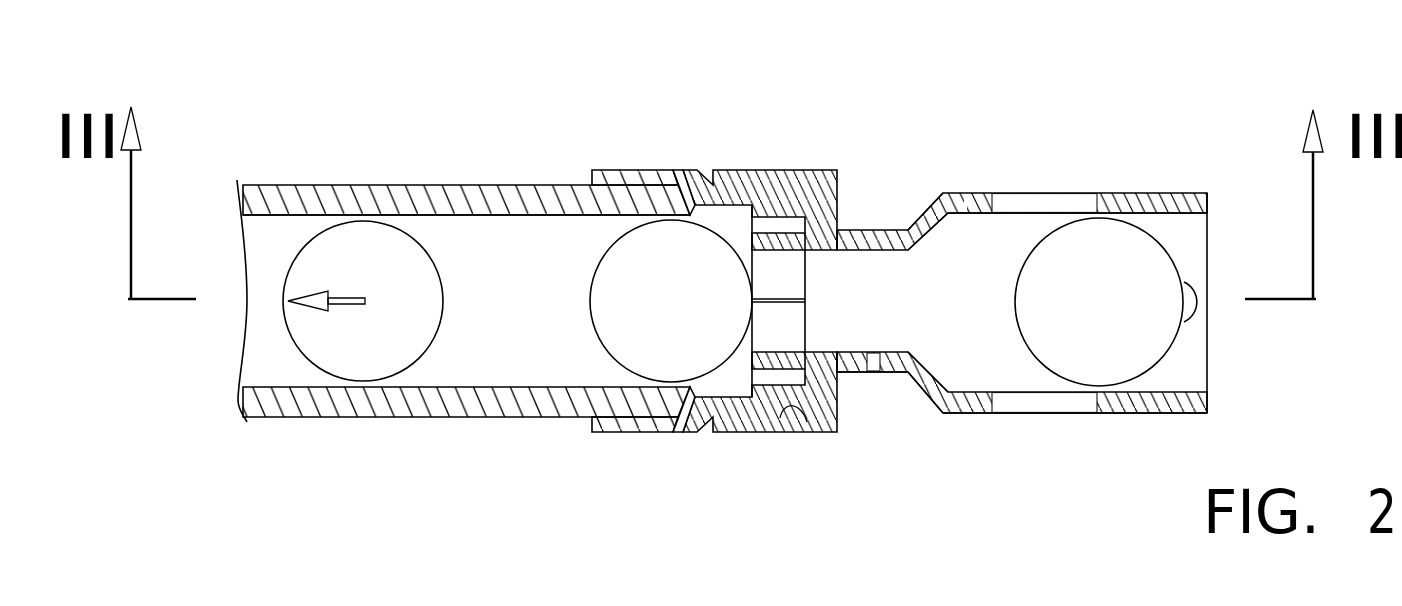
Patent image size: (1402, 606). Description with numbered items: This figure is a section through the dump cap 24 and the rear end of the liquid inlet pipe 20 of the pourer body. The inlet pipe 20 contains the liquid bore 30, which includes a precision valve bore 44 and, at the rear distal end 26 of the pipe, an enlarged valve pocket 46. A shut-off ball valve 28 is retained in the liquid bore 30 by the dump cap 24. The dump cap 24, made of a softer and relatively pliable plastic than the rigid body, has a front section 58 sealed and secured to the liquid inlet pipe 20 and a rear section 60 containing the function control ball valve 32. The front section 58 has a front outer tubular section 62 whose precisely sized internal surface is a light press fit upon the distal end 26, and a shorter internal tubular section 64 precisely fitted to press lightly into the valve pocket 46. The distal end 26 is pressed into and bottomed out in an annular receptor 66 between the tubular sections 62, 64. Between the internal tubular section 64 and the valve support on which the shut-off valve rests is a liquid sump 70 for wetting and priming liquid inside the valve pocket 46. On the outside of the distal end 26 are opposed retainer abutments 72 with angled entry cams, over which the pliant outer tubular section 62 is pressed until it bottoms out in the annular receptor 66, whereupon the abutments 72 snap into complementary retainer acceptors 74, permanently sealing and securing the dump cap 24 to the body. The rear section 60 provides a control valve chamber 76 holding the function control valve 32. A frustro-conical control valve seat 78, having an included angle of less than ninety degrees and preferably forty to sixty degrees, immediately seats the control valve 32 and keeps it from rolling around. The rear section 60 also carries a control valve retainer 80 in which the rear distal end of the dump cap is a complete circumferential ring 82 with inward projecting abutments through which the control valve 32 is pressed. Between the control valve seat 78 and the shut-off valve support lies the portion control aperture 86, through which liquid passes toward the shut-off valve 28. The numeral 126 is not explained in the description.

The liquid inlet pipe 20 is at (303, 417).
The dump cap 24 is at (862, 230).
The rear distal end 26 is at (837, 407).
The shut-off ball valve 28 is at (315, 233).
The liquid bore 30 is at (265, 333).
The function control ball valve 32 is at (1040, 203).
The precision valve bore 44 is at (466, 232).
The enlarged valve pocket 46 is at (652, 172).
The front section 58 is at (603, 432).
The rear section 60 is at (1147, 415).
The front outer tubular section 62 is at (618, 432).
The internal tubular section 64 is at (868, 373).
The annular receptor 66 is at (785, 410).
The liquid sump 70 is at (757, 377).
The retainer abutments 72 is at (752, 320).
The retainer acceptors 74 is at (680, 170).
The control valve chamber 76 is at (1013, 227).
The frustro-conical control valve seat 78 is at (927, 240).
The control valve retainer 80 is at (1178, 193).
The circumferential ring 82 is at (1180, 392).
The portion control aperture 86 is at (880, 373).
The window 126 is at (1058, 213).